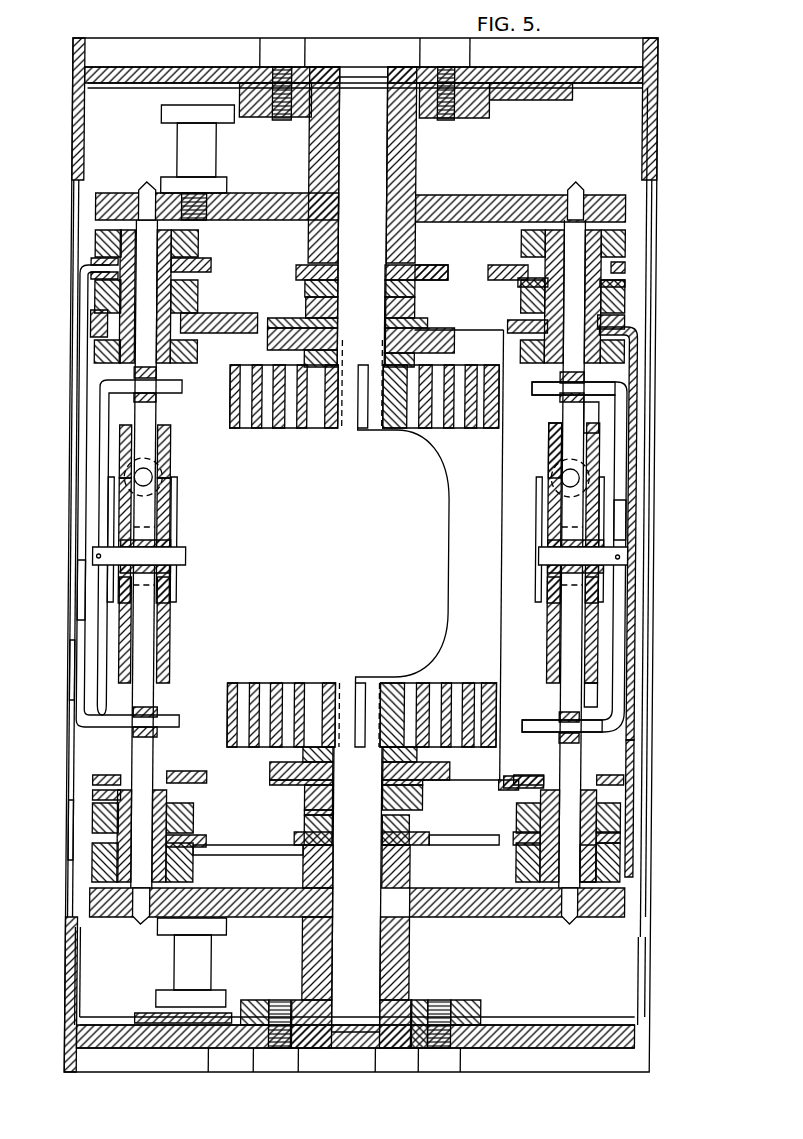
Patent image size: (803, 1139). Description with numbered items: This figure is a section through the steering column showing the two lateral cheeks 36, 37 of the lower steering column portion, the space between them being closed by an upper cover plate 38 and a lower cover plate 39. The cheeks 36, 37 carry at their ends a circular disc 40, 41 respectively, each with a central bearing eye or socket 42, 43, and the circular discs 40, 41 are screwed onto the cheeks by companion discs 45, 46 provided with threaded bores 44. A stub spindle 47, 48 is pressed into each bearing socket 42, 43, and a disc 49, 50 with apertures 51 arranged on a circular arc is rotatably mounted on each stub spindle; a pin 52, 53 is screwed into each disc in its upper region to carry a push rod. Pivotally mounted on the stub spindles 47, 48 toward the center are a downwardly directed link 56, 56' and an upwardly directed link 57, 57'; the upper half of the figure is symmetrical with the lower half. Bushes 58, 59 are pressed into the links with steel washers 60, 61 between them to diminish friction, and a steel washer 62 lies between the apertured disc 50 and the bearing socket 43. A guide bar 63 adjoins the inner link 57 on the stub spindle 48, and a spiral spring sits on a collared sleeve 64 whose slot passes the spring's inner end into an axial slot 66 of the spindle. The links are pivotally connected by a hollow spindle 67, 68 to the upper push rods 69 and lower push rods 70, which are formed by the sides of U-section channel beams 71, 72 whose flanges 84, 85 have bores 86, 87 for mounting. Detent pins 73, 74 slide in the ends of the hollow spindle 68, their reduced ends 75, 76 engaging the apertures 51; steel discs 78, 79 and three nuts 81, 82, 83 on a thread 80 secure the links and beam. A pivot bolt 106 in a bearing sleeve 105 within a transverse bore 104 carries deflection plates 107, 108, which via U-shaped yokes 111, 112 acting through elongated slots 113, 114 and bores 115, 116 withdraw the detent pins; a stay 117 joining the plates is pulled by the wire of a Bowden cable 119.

The lateral cheek 36 is at (74, 148).
The lateral cheek 37 is at (80, 995).
The upper cover plate 38 is at (78, 676).
The lower cover plate 39 is at (647, 178).
The circular disc 40 is at (215, 70).
The circular disc 41 is at (183, 1035).
The bearing eye or socket 42 is at (323, 87).
The bearing eye or socket 43 is at (322, 1032).
The threaded bore 44 is at (443, 82).
The companion disc 45 is at (553, 108).
The companion disc 46 is at (478, 1005).
The stub spindle 47 is at (368, 98).
The stub spindle 48 is at (378, 1032).
The disc 49 is at (240, 195).
The disc 50 is at (266, 918).
The aperture 51 is at (150, 208).
The pin 52 is at (182, 110).
The pin 53 is at (212, 1020).
The downwardly directed link 56 is at (464, 853).
The downwardly directed link 56' is at (657, 245).
The upwardly directed link 57 is at (291, 805).
The upwardly directed link 57' is at (68, 314).
The bush 58 is at (418, 803).
The bush 59 is at (415, 840).
The steel washer 60 is at (305, 838).
The steel washer 61 is at (305, 852).
The steel washer 62 is at (313, 925).
The guide bar 63 is at (280, 770).
The collared sleeve 64 is at (322, 690).
The axial slot 66 is at (265, 690).
The hollow spindle 67 is at (127, 434).
The hollow spindle 68 is at (598, 463).
The upper push rod 69 is at (80, 830).
The lower push rod 70 is at (641, 760).
The channel beam 71 is at (84, 588).
The channel beam 72 is at (641, 575).
The detent pin 73 is at (580, 377).
The detent pin 74 is at (605, 726).
The end of detent pin 75 is at (598, 212).
The end of detent pin 76 is at (576, 920).
The steel disc 78 is at (624, 852).
The steel disc 79 is at (618, 808).
The thread 80 is at (600, 862).
The nut 81 is at (612, 870).
The nut 82 is at (624, 836).
The nut 83 is at (636, 782).
The flange 84 is at (512, 785).
The flange 85 is at (520, 326).
The bore 86 is at (520, 780).
The bore 87 is at (617, 322).
The transverse bore 104 is at (556, 580).
The bearing sleeve 105 is at (545, 540).
The pivot bolt 106 is at (175, 550).
The deflection plate 107 is at (124, 500).
The deflection plate 108 is at (181, 498).
The U-shaped yoke 111 is at (100, 403).
The U-shaped yoke 112 is at (104, 637).
The elongated slot 113 is at (596, 420).
The elongated slot 114 is at (596, 698).
The bore 115 is at (612, 391).
The bore 116 is at (568, 718).
The stay 117 is at (142, 474).
The Bowden cable 119 is at (160, 466).